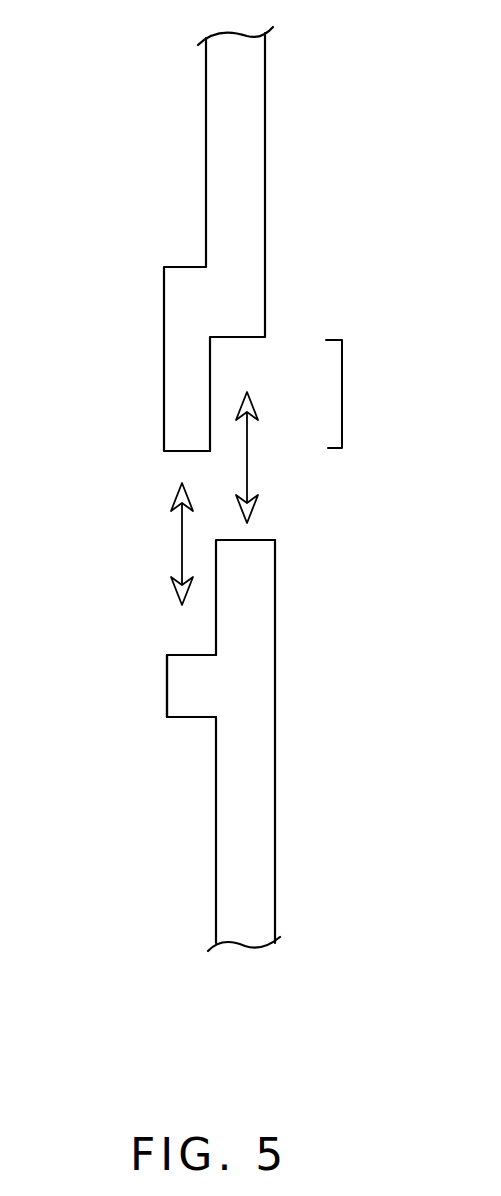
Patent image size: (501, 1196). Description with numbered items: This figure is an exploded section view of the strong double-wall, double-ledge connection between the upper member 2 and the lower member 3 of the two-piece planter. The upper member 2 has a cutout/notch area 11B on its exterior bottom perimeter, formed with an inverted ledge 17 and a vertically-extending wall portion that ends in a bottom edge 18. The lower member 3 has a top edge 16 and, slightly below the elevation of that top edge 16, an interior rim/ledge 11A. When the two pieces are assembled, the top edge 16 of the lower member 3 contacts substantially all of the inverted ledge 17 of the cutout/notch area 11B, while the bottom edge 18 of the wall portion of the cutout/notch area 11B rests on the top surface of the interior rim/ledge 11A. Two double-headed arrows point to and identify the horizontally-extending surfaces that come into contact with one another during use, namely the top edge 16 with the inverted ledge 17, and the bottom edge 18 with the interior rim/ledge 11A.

The upper member 2 is at (252, 78).
The lower member 3 is at (262, 902).
The interior rim/ledge 11A is at (178, 697).
The cutout/notch area 11B is at (342, 398).
The top edge 16 is at (270, 532).
The inverted ledge 17 is at (244, 340).
The bottom edge 18 is at (176, 464).